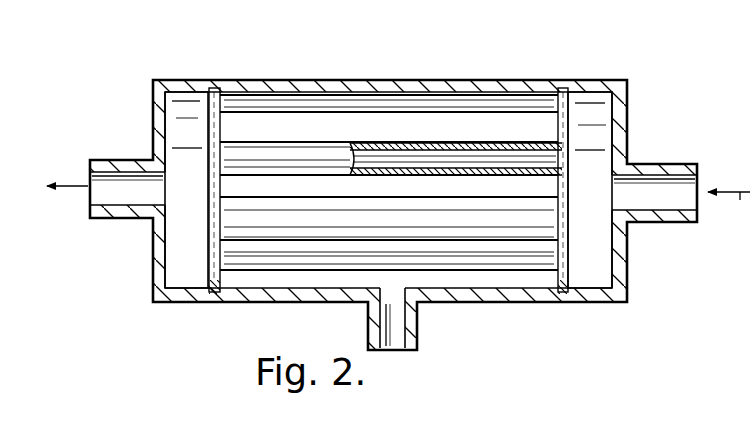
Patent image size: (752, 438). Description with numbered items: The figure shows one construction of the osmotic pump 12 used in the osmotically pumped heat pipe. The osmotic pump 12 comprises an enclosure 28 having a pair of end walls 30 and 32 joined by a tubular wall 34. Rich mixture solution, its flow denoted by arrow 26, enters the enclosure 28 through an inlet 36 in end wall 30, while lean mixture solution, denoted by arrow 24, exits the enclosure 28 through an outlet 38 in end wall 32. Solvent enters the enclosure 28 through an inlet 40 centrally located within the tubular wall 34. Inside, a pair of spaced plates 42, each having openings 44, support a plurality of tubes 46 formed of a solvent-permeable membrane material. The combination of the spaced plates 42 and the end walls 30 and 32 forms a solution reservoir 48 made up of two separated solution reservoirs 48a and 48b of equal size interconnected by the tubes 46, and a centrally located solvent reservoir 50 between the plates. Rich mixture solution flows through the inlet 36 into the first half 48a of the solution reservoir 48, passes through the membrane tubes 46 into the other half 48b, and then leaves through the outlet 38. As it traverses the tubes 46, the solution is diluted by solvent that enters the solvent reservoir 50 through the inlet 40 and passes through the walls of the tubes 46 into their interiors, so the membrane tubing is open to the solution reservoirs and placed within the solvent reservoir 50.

The osmotic pump 12 is at (296, 50).
The lean mixture solution flow 24 is at (69, 188).
The rich mixture solution flow 26 is at (741, 200).
The enclosure 28 is at (393, 192).
The end wall 30 is at (627, 118).
The end wall 32 is at (153, 118).
The tubular wall 34 is at (494, 80).
The inlet 36 is at (640, 164).
The outlet 38 is at (134, 222).
The inlet 40 is at (366, 305).
The spaced plates 42 is at (205, 284).
The openings 44 is at (562, 166).
The tubes 46 is at (240, 236).
The solution reservoir 48 is at (390, 196).
The first half of solution reservoir 48a is at (605, 252).
The other half of solution reservoir 48b is at (200, 247).
The solvent reservoir 50 is at (248, 277).